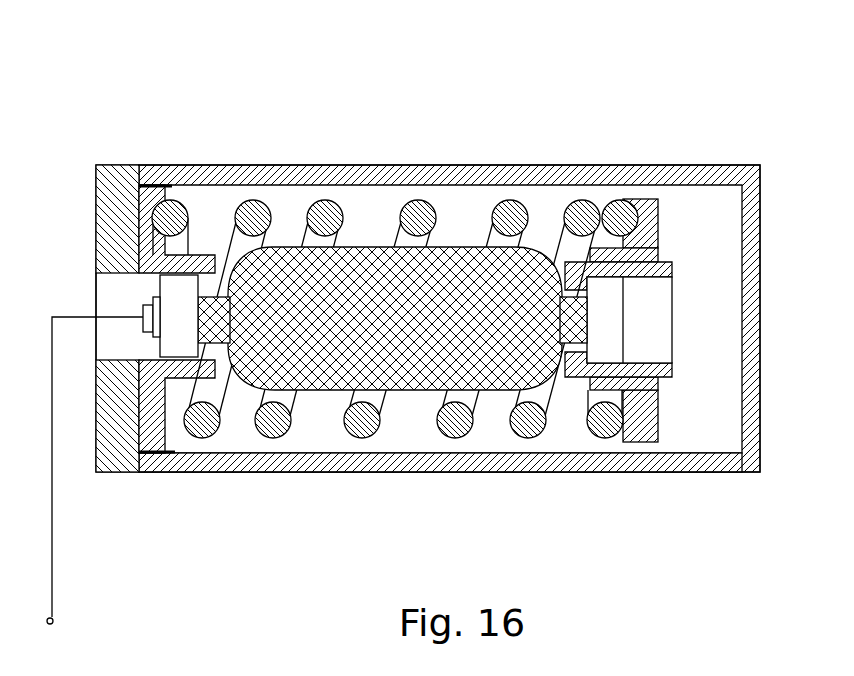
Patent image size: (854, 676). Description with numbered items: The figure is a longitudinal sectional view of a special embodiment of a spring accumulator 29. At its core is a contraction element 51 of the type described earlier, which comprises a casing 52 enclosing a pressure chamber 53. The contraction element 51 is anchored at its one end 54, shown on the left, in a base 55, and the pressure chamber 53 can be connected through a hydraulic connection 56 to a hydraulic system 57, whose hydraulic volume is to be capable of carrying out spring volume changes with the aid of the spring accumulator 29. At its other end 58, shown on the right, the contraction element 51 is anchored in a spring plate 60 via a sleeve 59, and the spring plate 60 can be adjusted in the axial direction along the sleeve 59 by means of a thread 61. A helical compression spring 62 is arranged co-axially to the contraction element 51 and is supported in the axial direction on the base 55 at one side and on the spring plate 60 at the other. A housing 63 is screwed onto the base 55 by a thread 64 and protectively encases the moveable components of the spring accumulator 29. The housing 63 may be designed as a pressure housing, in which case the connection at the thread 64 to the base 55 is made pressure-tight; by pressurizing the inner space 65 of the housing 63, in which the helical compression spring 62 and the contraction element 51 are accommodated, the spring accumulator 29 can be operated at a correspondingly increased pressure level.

The spring accumulator 29 is at (428, 247).
The contraction element 51 is at (357, 262).
The casing 52 is at (452, 240).
The pressure chamber 53 is at (420, 392).
The one end 54 is at (175, 289).
The base 55 is at (139, 185).
The hydraulic connection 56 is at (143, 330).
The hydraulic system 57 is at (52, 553).
The other end 58 is at (612, 335).
The sleeve 59 is at (640, 277).
The spring plate 60 is at (652, 222).
The thread 61 is at (640, 442).
The helical compression spring 62 is at (272, 438).
The housing 63 is at (558, 462).
The thread 64 is at (153, 472).
The inner space 65 is at (720, 420).